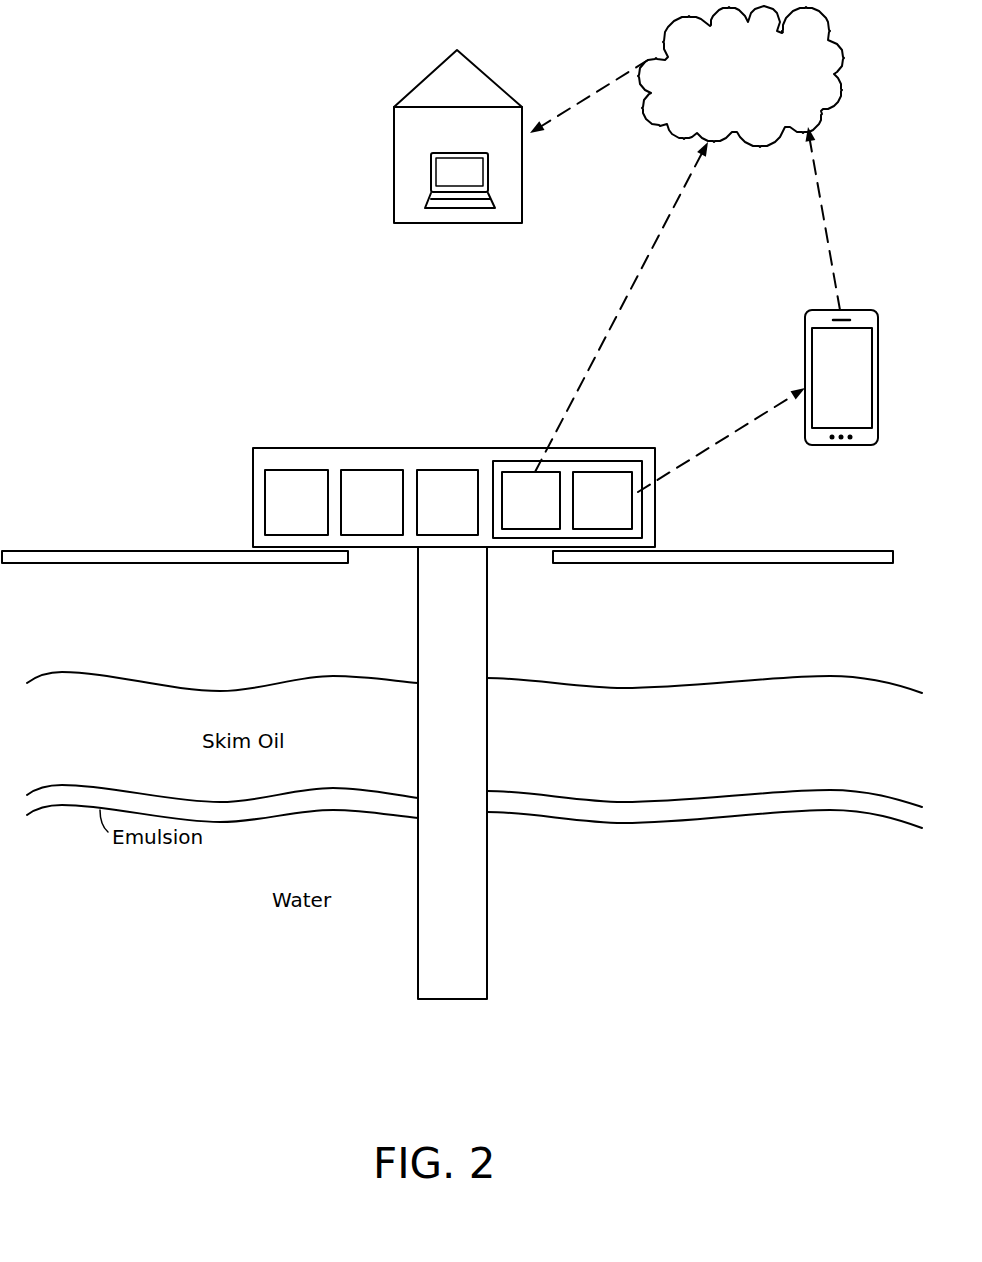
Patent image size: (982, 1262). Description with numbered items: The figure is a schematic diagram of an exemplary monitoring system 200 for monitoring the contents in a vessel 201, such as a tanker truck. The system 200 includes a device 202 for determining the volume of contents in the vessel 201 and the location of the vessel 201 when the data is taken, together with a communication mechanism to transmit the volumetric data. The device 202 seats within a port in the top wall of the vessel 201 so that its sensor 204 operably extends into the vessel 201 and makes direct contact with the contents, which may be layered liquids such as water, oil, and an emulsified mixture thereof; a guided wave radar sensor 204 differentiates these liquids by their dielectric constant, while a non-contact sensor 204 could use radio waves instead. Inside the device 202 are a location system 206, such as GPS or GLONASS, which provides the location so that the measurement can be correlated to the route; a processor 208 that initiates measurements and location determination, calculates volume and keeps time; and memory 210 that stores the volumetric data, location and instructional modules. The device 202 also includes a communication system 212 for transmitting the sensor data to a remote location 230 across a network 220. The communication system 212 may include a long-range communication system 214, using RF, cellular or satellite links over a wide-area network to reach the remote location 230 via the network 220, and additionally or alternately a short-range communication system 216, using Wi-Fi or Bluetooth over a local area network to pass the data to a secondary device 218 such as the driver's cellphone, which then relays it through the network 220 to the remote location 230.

The monitoring system 200 is at (188, 110).
The vessel 201 is at (130, 551).
The device 202 is at (258, 425).
The sensor 204 is at (488, 933).
The location system 206 is at (265, 502).
The processor 208 is at (365, 470).
The memory 210 is at (425, 468).
The communication system 212 is at (573, 462).
The long-range communication system 214 is at (520, 473).
The short-range communication system 216 is at (603, 530).
The secondary device 218 is at (845, 446).
The network 220 is at (758, 86).
The remote location 230 is at (477, 138).